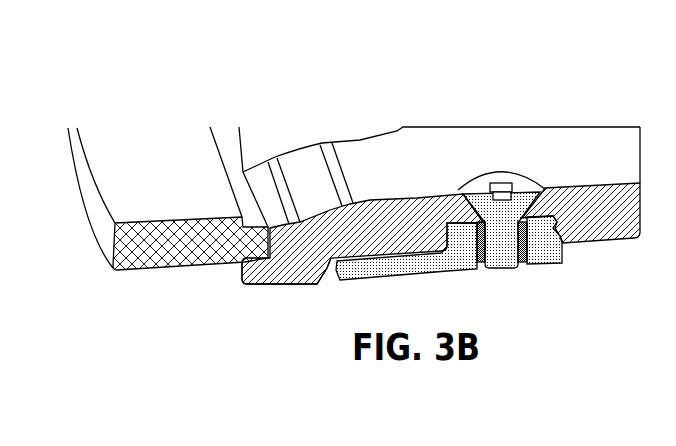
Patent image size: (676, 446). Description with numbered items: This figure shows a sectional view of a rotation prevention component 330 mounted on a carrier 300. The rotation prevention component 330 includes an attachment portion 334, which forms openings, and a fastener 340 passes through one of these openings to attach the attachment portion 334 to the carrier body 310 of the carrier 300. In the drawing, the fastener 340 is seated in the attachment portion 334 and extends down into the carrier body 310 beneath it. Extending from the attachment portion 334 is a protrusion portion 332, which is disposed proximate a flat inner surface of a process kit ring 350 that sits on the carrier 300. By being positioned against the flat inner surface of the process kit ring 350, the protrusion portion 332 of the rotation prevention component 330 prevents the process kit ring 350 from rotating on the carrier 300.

The carrier 300 is at (268, 53).
The carrier body 310 is at (356, 272).
The rotation prevention component 330 is at (405, 210).
The protrusion portion 332 is at (237, 303).
The attachment portion 334 is at (441, 149).
The fastener 340 is at (484, 170).
The process kit ring 350 is at (162, 181).